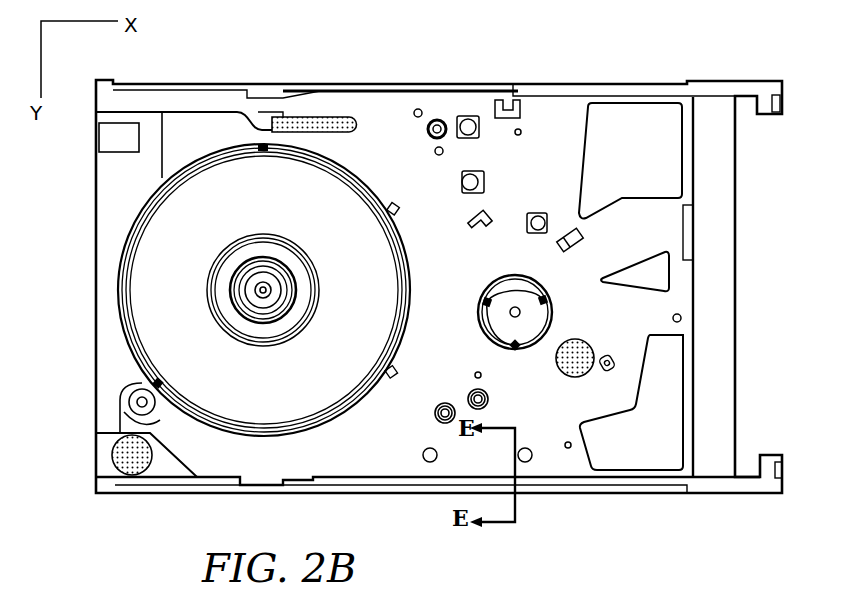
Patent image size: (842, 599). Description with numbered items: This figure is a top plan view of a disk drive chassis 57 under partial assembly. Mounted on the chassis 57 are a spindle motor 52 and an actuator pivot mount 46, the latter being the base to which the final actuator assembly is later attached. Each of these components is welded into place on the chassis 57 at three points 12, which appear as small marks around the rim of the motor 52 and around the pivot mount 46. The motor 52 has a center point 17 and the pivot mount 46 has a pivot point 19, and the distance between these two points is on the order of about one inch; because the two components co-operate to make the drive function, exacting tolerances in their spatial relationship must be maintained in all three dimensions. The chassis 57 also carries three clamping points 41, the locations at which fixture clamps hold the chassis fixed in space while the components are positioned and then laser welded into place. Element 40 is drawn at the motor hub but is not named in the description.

The weld points 12 is at (263, 152).
The center point 17 is at (262, 282).
The pivot point 19 is at (520, 314).
The disk hub 40 is at (245, 290).
The clamping points 41 is at (325, 118).
The actuator pivot mount 46 is at (505, 278).
The spindle motor 52 is at (127, 343).
The chassis 57 is at (547, 137).